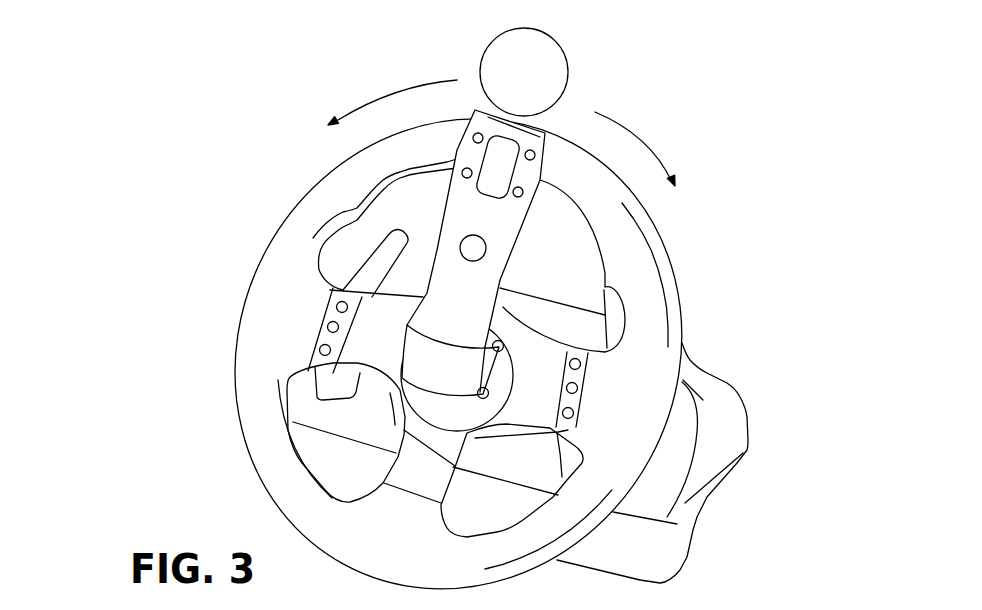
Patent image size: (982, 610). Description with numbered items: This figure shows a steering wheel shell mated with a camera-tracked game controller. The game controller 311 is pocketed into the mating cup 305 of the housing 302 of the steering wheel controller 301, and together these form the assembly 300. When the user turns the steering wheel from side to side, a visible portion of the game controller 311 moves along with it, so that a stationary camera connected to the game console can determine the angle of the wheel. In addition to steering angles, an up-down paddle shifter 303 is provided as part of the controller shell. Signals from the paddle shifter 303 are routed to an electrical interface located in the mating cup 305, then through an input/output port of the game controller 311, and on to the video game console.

The assembly 300 is at (282, 82).
The steering wheel controller 301 is at (733, 380).
The housing 302 is at (670, 257).
The up-down paddle shifter 303 is at (370, 268).
The mating cup 305 is at (462, 382).
The game controller 311 is at (568, 53).